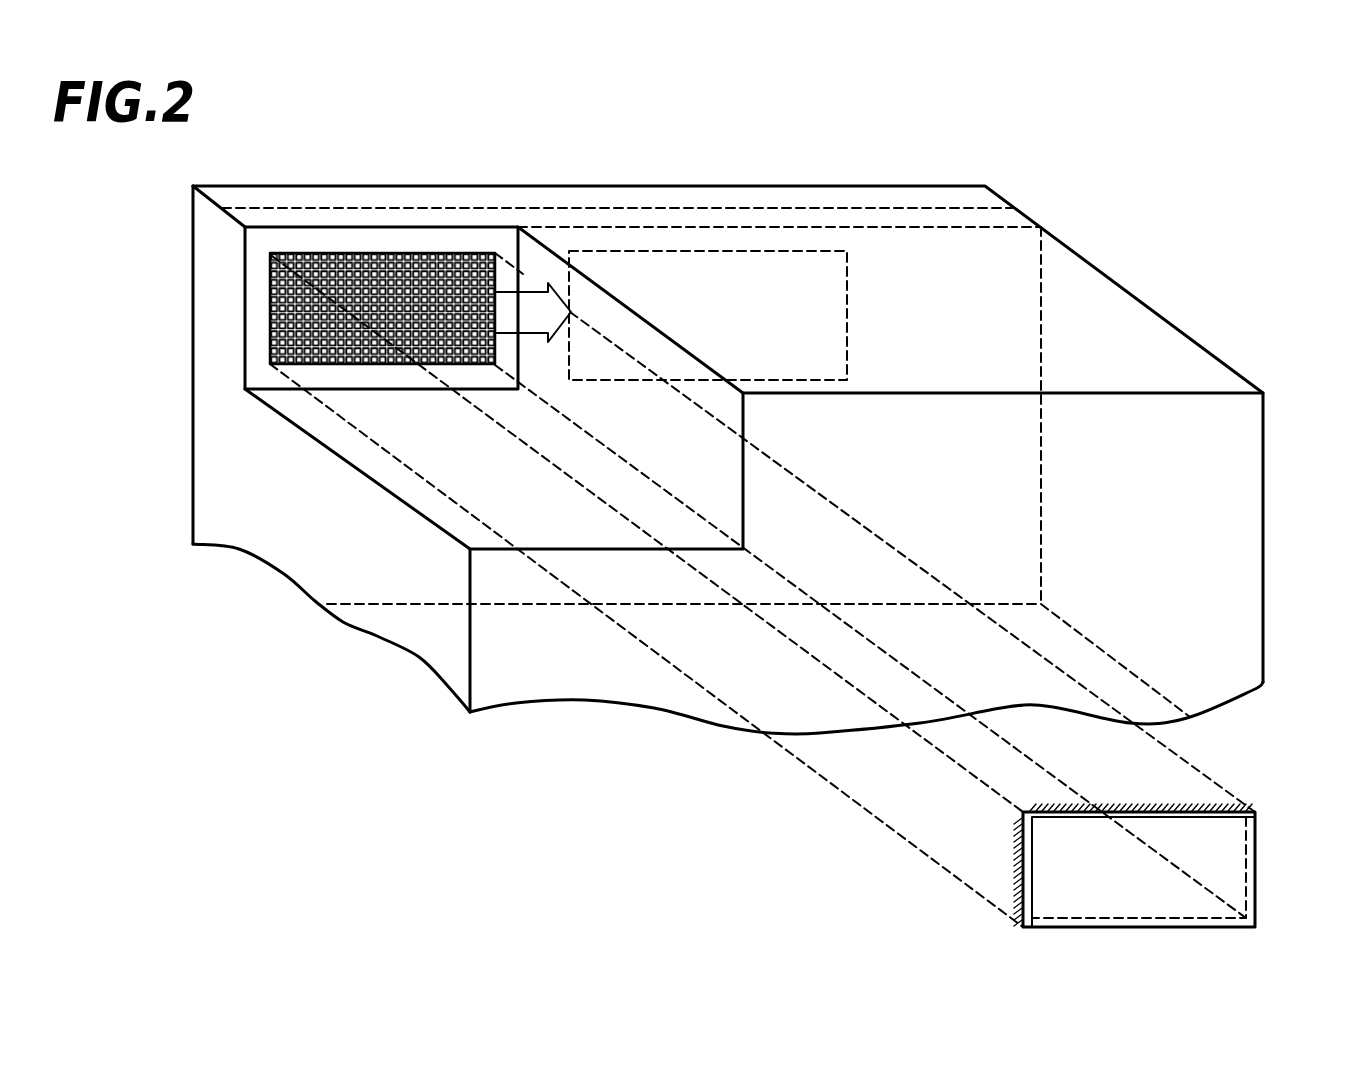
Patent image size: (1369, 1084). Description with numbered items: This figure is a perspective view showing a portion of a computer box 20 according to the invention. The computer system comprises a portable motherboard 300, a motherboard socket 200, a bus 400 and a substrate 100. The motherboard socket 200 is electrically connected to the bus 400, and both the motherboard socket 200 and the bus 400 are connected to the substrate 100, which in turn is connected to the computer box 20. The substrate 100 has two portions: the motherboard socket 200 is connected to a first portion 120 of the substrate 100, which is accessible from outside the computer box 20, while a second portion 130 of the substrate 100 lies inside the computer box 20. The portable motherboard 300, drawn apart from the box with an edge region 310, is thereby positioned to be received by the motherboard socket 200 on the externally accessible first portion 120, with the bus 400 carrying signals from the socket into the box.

The computer box 20 is at (1265, 512).
The substrate 100 is at (494, 218).
The first portion 120 is at (368, 238).
The second portion 130 is at (707, 252).
The motherboard socket 200 is at (270, 304).
The portable motherboard 300 is at (1257, 888).
The coating 310 is at (1020, 883).
The bus 400 is at (533, 312).